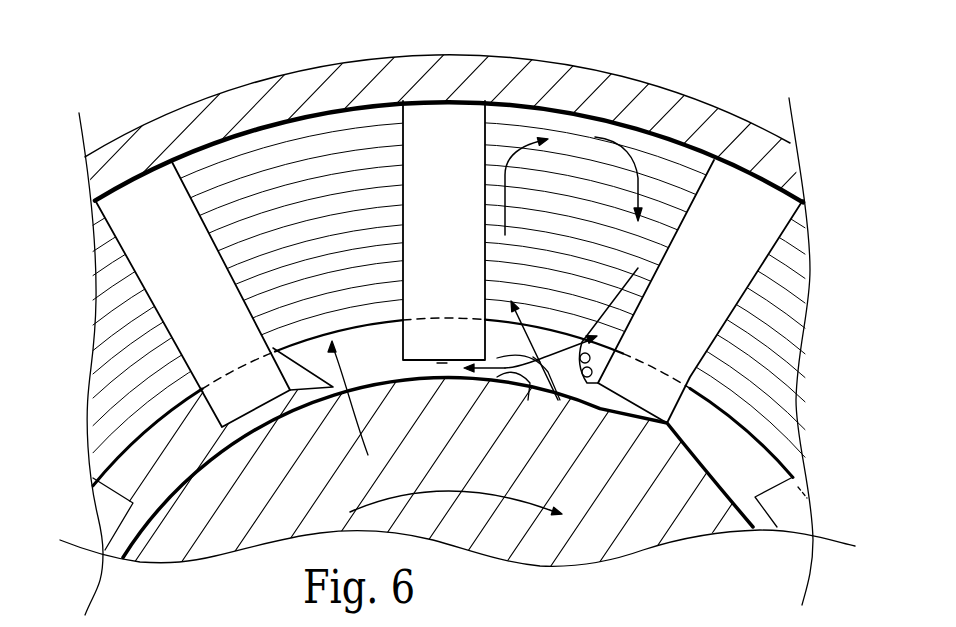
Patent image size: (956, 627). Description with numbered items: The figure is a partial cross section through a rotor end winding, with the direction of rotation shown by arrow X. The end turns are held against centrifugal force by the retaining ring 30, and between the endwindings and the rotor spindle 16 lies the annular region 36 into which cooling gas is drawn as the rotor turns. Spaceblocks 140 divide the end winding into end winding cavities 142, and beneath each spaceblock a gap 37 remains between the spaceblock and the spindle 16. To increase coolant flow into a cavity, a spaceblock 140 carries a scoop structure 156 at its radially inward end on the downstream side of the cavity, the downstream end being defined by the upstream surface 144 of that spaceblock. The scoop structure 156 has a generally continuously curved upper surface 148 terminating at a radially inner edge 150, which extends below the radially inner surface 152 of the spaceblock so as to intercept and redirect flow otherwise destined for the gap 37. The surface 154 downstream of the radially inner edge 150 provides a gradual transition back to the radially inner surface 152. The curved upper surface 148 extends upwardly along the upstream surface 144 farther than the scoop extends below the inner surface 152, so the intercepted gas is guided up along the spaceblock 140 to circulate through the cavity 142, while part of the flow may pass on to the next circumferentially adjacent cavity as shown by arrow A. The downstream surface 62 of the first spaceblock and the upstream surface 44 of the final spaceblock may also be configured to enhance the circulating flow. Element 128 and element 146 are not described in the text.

The rotor spindle 16 is at (525, 558).
The retaining ring 30 is at (513, 65).
The annular region 36 is at (713, 520).
The gap 37 is at (242, 430).
The upstream surface of the final spaceblock 44 is at (122, 493).
The downstream surface of the first spaceblock 62 is at (770, 483).
The flow channel 128 is at (357, 409).
The spaceblock 140 is at (433, 110).
The end winding cavity 142 is at (263, 165).
The upstream surface of the spaceblock 144 is at (483, 270).
The slot bottom 146 is at (422, 340).
The curved upper surface 148 is at (533, 357).
The radially inner edge 150 is at (517, 350).
The radially inner surface of the spaceblock 152 is at (437, 363).
The surface of the scoop structure downstream of the radially inner edge 154 is at (315, 392).
The scoop structure 156 is at (497, 360).
The arrow indicating flow to the next circumferentially adjacent cavity A is at (638, 295).
The arrow indicating direction of rotation X is at (456, 503).